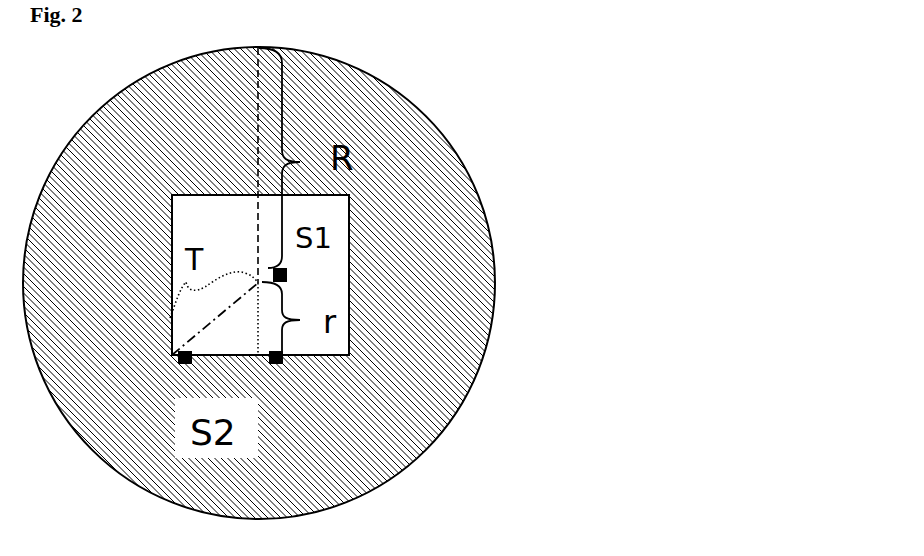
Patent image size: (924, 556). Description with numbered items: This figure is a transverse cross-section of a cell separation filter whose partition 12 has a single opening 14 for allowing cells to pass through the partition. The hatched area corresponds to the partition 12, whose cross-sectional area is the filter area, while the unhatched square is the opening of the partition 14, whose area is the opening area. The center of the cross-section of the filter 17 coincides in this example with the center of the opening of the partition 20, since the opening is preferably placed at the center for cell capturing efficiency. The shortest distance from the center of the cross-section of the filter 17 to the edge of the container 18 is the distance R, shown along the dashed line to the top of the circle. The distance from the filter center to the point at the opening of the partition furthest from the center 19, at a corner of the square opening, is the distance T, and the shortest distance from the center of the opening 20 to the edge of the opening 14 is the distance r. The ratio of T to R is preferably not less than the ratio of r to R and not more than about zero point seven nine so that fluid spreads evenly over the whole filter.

The partition 12 is at (437, 328).
The opening of the partition 14 is at (318, 292).
The center of the cross-section of the filter 17 is at (287, 275).
The edge of the container 18 is at (257, 42).
The point at the opening of the partition furthest from the center of the cross sect 19 is at (180, 364).
The center of the opening of the partition 20 is at (510, 208).